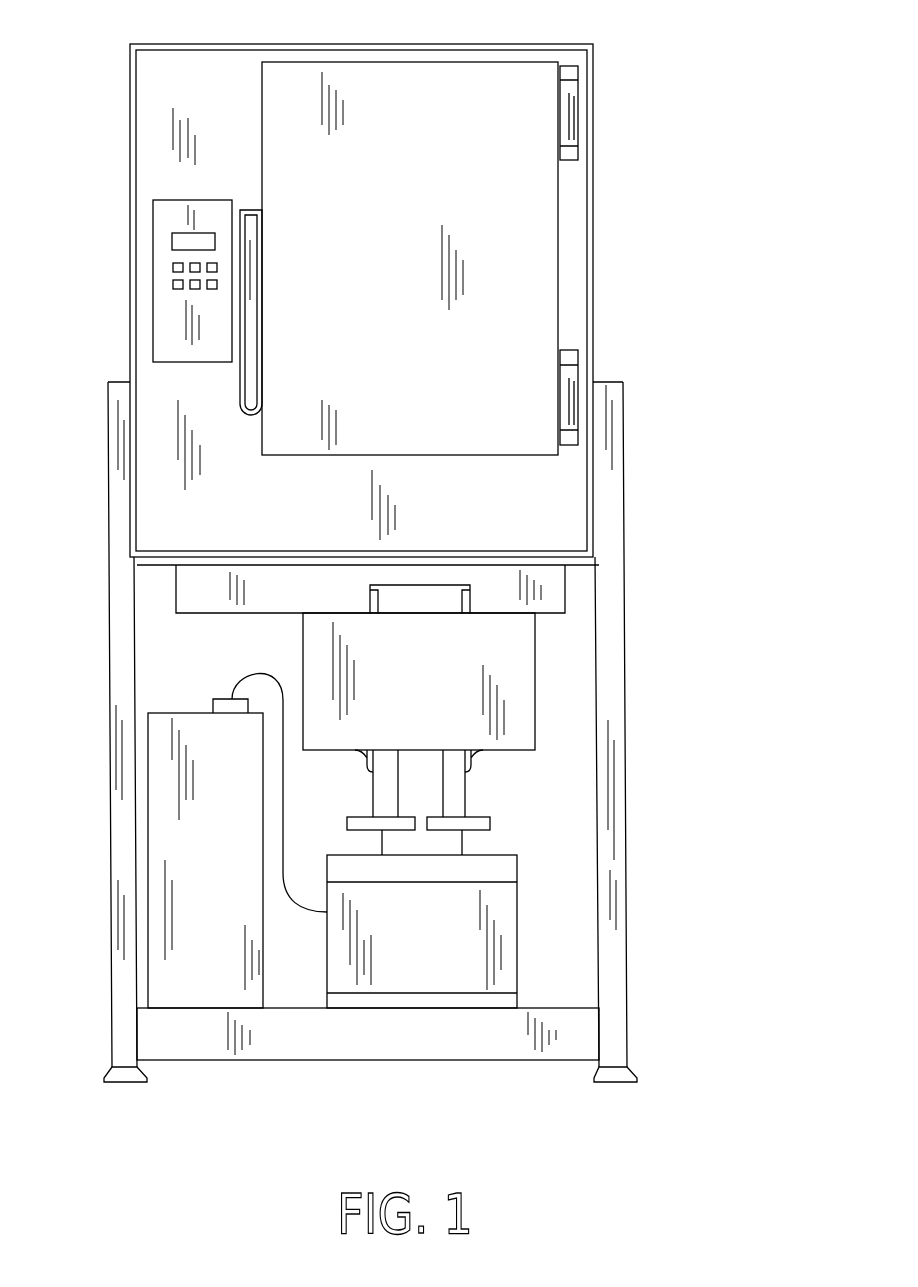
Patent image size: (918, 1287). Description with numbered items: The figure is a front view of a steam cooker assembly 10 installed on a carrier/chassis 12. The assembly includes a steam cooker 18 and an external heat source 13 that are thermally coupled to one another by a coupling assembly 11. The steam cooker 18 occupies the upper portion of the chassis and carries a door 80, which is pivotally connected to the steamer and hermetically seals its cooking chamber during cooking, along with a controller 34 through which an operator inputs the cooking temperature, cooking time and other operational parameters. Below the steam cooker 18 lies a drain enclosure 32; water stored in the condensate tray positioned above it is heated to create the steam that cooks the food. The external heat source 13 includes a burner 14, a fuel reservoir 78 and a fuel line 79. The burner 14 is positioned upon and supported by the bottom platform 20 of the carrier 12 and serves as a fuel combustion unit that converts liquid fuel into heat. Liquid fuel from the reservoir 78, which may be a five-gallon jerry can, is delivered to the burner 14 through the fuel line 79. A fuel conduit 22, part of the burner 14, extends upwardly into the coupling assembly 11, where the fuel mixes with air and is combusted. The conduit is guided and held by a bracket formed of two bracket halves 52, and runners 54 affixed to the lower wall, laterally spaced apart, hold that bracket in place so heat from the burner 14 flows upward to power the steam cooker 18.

The steam cooker assembly 10 is at (618, 46).
The steam cooker 18 is at (223, 43).
The door 80 is at (530, 197).
The controller 34 is at (164, 247).
The drain enclosure 32 is at (552, 588).
The carrier/chassis 12 is at (612, 641).
The coupling assembly 11 is at (540, 700).
The runners 54 is at (368, 755).
The bracket halves 52 is at (374, 790).
The fuel conduit 22 is at (428, 795).
The external heat source 13 is at (535, 873).
The burner 14 is at (500, 941).
The bottom platform 20 is at (525, 1007).
The fuel reservoir 78 is at (183, 875).
The fuel line 79 is at (290, 900).